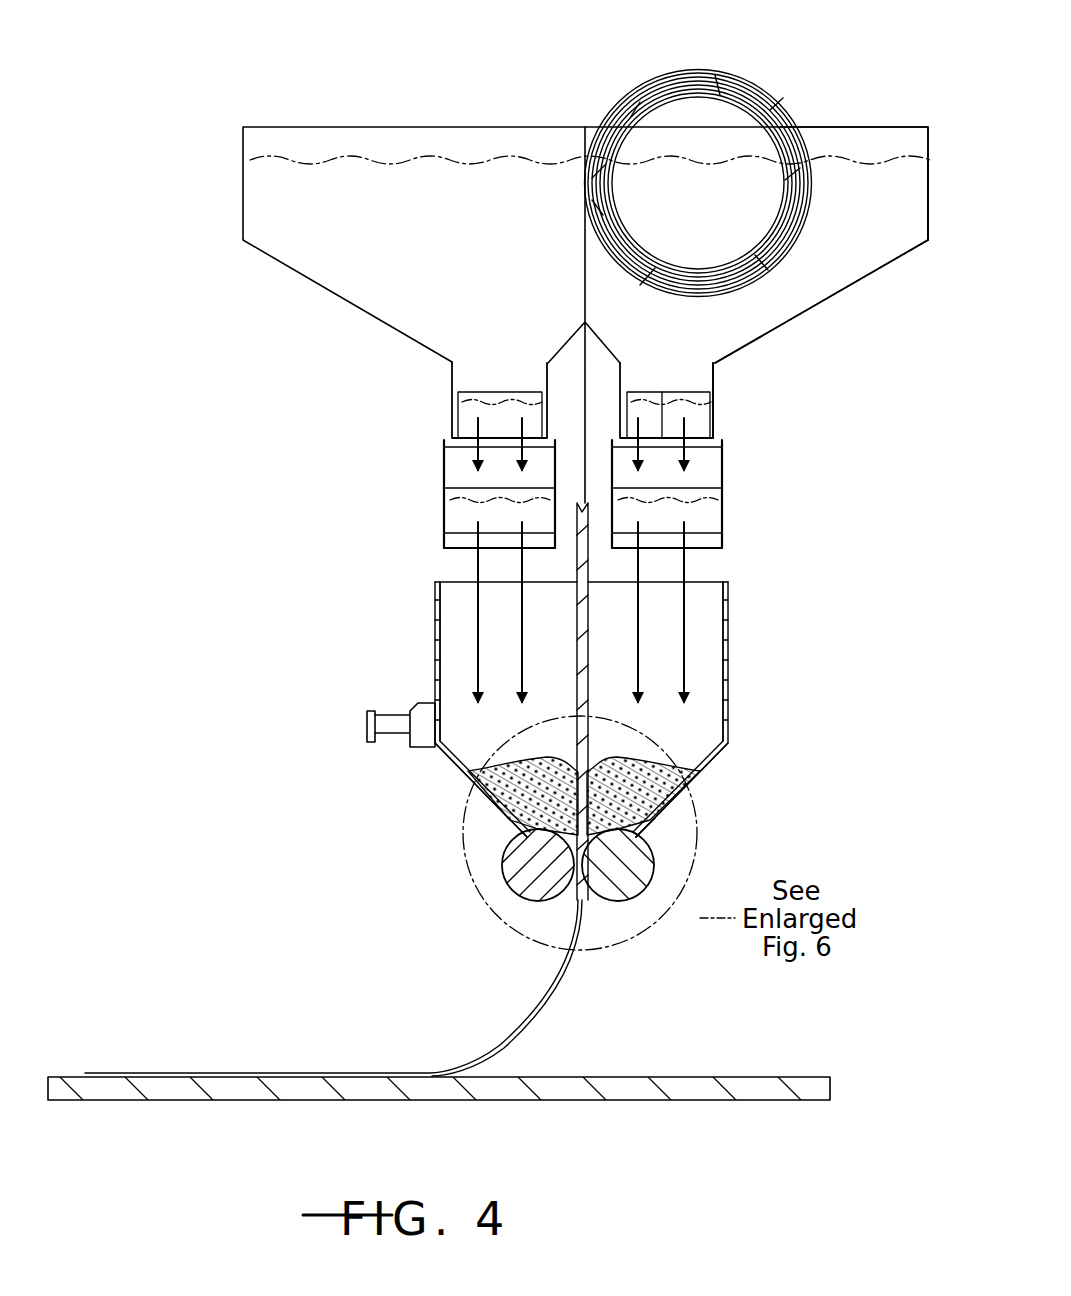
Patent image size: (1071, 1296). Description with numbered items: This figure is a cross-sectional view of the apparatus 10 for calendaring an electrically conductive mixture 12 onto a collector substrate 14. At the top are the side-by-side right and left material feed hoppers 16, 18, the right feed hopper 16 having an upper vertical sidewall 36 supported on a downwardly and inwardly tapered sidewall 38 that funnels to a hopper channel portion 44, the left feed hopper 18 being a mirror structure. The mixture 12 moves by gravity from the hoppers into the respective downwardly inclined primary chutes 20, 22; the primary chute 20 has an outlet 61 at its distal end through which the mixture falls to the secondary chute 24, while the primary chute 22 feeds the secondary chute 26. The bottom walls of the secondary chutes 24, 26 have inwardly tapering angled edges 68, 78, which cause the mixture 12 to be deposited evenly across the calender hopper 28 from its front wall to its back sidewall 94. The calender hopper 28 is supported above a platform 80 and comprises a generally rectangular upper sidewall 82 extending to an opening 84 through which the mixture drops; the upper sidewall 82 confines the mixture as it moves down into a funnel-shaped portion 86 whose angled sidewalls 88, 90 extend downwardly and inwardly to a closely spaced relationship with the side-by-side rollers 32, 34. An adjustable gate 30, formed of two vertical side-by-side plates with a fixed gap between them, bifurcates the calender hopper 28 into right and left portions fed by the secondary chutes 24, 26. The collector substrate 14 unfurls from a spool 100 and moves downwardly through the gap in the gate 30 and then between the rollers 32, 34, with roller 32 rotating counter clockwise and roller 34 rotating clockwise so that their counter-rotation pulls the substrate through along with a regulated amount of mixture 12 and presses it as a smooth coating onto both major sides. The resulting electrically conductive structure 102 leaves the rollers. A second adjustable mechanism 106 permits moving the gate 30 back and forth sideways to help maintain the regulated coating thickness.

The apparatus 10 is at (518, 92).
The electrically conductive mixture 12 is at (463, 420).
The collector substrate 14 is at (583, 370).
The right feed hopper 16 is at (928, 127).
The left feed hopper 18 is at (243, 140).
The primary chute 20 is at (678, 393).
The primary chute 22 is at (500, 388).
The secondary chute 24 is at (725, 467).
The secondary chute 26 is at (444, 473).
The calender hopper 28 is at (728, 682).
The adjustable gate 30 is at (588, 615).
The roller 32 is at (647, 893).
The roller 34 is at (506, 868).
The upper vertical sidewall 36 is at (928, 200).
The tapered sidewall 38 is at (840, 292).
The hopper channel portion 44 is at (717, 422).
The outlet 61 is at (664, 440).
The angled edge 68 is at (660, 548).
The angled edge 78 is at (500, 565).
The platform 80 is at (688, 1085).
The upper sidewall 82 is at (728, 640).
The opening 84 is at (460, 610).
The funnel-shaped portion 86 is at (648, 835).
The angled sidewall 88 is at (717, 760).
The angled sidewall 90 is at (490, 798).
The back sidewall 94 is at (460, 698).
The spool 100 is at (722, 70).
The electrically conductive structure 102 is at (545, 1012).
The second adjustable mechanism 106 is at (378, 751).